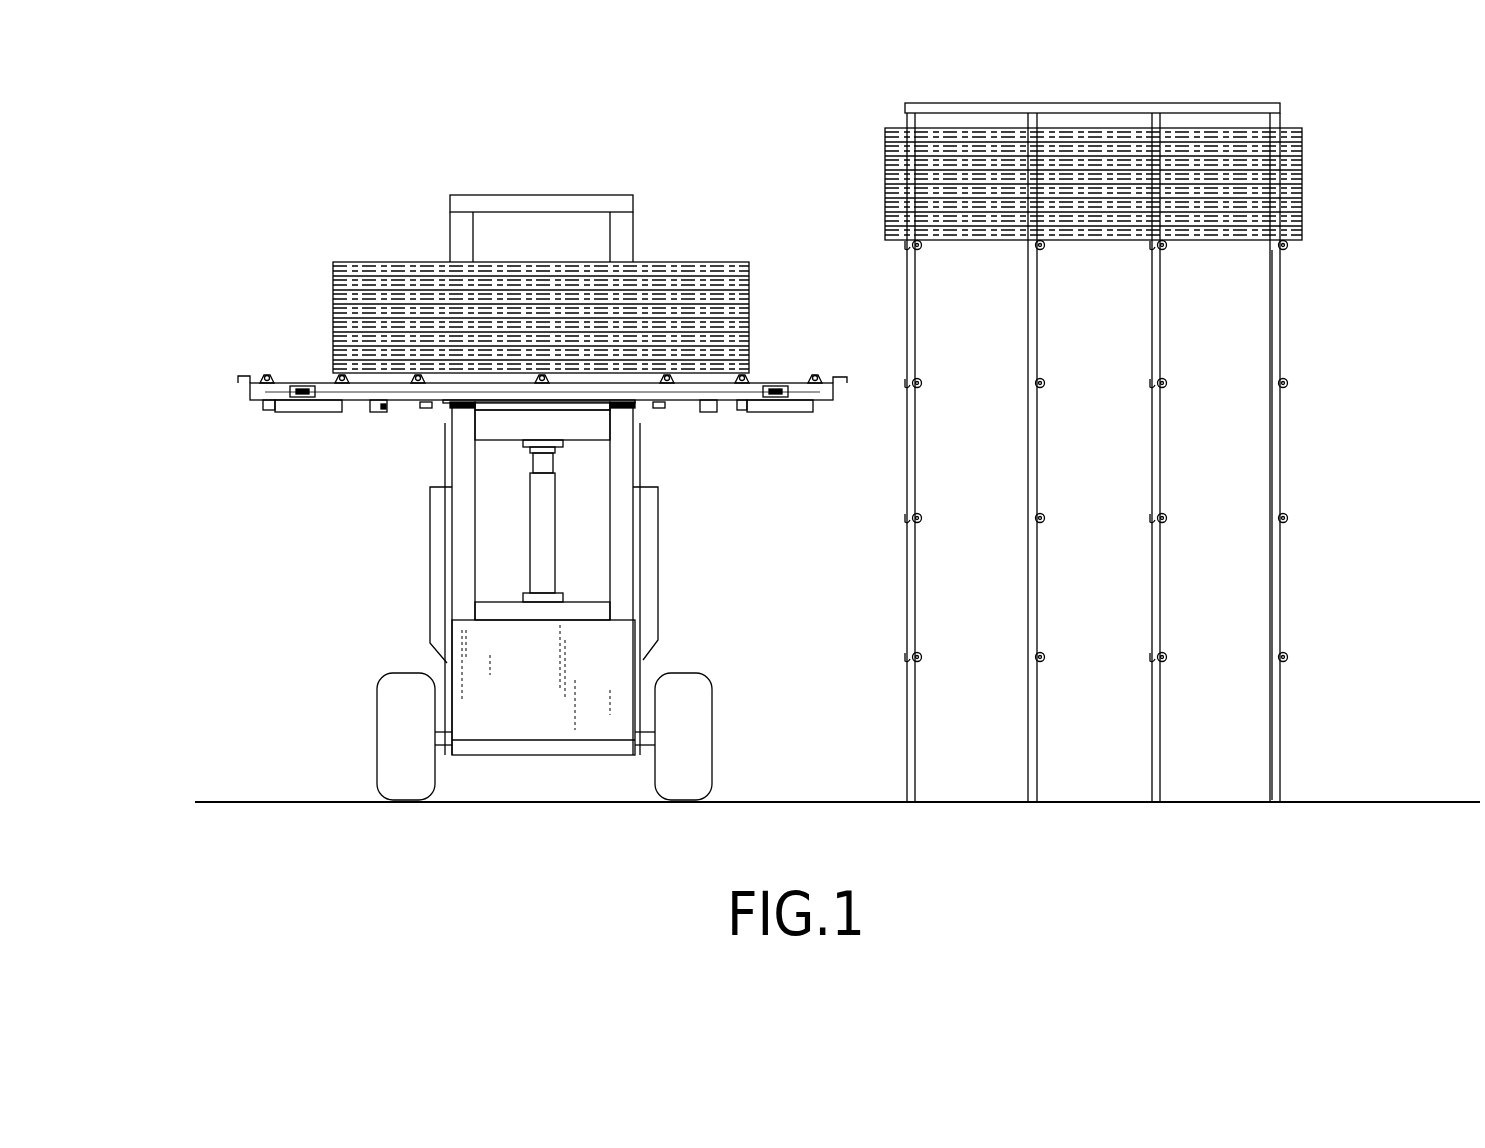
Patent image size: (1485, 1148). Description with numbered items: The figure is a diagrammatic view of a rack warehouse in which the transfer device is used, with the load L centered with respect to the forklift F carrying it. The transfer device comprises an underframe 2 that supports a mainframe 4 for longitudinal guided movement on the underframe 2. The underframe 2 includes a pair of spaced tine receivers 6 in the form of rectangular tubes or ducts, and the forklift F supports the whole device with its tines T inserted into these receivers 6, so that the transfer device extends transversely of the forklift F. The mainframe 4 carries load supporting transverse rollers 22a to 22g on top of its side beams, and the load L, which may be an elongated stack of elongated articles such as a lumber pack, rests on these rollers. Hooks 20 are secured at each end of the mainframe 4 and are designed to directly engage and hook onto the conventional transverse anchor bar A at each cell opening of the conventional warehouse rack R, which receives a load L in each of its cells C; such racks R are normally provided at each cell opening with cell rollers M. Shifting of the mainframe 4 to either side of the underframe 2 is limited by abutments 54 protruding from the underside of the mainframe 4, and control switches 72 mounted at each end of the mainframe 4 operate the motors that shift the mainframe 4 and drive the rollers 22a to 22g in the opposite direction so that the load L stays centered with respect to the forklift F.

The underframe 2 is at (495, 408).
The mainframe 4 is at (400, 402).
The tine receivers 6 is at (437, 405).
The hooks 20 is at (238, 378).
The load supporting transverse roller 22a is at (816, 375).
The load supporting transverse roller 22g is at (265, 375).
The abutments 54 is at (702, 412).
The control switches 72 is at (300, 398).
The tines T is at (455, 404).
The load L is at (680, 271).
The forklift F is at (678, 564).
The anchor bar A is at (903, 520).
The cell rollers M is at (1170, 390).
The warehouse rack R is at (1285, 585).
The cell C is at (1210, 348).